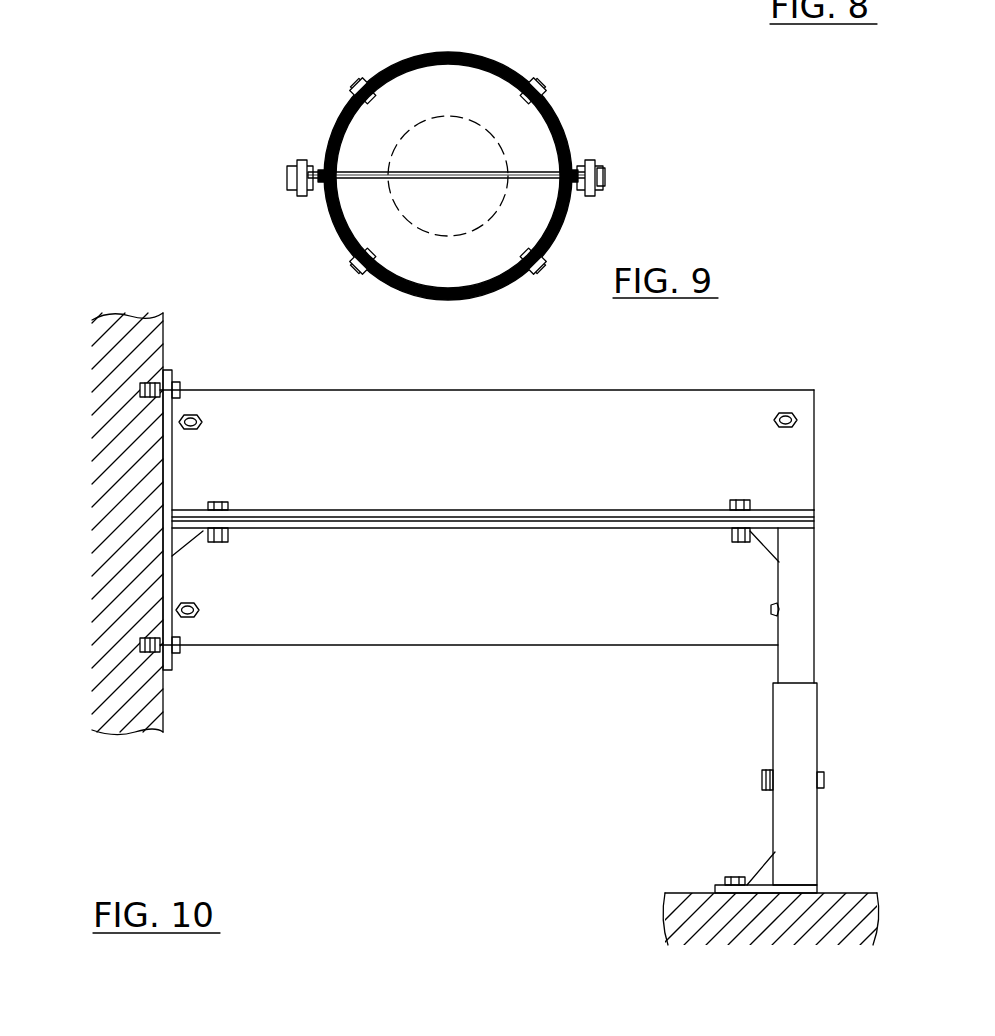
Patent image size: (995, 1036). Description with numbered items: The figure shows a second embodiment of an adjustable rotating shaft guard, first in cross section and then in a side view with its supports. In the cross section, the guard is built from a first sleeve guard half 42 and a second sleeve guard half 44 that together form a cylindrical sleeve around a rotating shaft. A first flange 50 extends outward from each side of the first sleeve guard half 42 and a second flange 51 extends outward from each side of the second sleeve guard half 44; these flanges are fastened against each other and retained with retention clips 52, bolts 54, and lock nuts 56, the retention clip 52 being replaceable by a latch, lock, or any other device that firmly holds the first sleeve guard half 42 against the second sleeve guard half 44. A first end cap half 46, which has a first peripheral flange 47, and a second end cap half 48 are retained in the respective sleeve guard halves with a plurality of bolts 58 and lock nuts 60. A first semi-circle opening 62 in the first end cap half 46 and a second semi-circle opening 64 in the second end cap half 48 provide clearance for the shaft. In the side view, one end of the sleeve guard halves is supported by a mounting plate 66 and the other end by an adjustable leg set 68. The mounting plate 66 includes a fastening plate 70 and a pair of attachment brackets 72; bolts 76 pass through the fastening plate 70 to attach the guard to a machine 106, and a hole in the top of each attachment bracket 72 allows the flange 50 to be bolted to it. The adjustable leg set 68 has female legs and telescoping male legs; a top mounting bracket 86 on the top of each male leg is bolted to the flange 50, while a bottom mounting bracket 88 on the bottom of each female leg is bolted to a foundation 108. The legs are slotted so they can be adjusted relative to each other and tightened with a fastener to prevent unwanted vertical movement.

In FIG. 9, the first sleeve guard half 42 is at (343, 237).
In FIG. 10, the first sleeve guard half 42 is at (330, 655).
In FIG. 9, the second sleeve guard half 44 is at (508, 70).
In FIG. 10, the second sleeve guard half 44 is at (620, 390).
In FIG. 9, the first end cap half 46 is at (470, 268).
In FIG. 8, the first peripheral flange 47 is at (610, 6).
In FIG. 9, the second end cap half 48 is at (470, 80).
In FIG. 10, the first flange 50 is at (485, 526).
In FIG. 10, the second flange 51 is at (800, 508).
In FIG. 9, the retention clip 52 is at (612, 178).
In FIG. 9, the bolt 54 is at (595, 150).
In FIG. 9, the lock nut 56 is at (603, 188).
In FIG. 8, the bolt 58 is at (680, 2).
In FIG. 9, the bolt 58 is at (363, 84).
In FIG. 10, the bolt 58 is at (202, 421).
In FIG. 9, the lock nut 60 is at (403, 62).
In FIG. 9, the first semi-circle opening 62 is at (388, 195).
In FIG. 9, the second semi-circle opening 64 is at (397, 143).
In FIG. 10, the mounting plate 66 is at (80, 660).
In FIG. 10, the adjustable leg set 68 is at (852, 742).
In FIG. 10, the fastening plate 70 is at (163, 453).
In FIG. 10, the attachment bracket 72 is at (190, 543).
In FIG. 10, the bolt 76 is at (182, 386).
In FIG. 10, the top mounting bracket 86 is at (757, 540).
In FIG. 10, the bottom mounting bracket 88 is at (760, 878).
In FIG. 10, the machine 106 is at (165, 338).
In FIG. 10, the foundation 108 is at (845, 893).